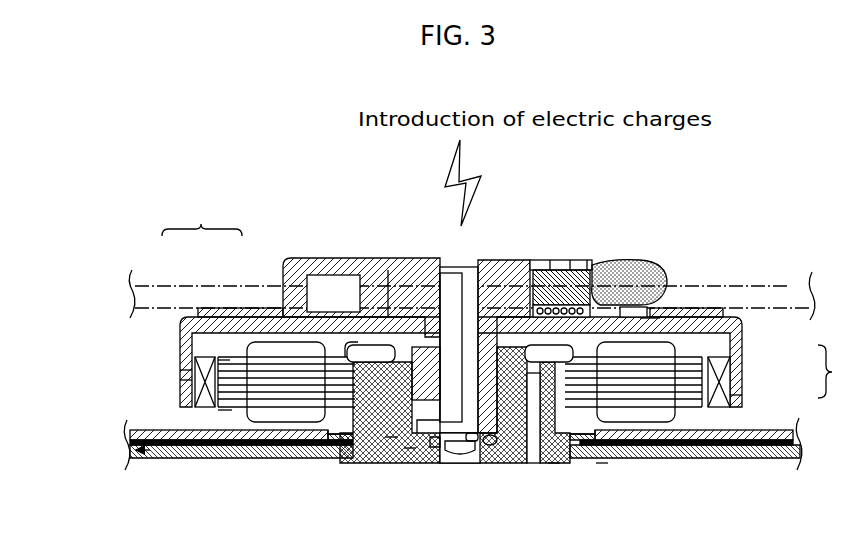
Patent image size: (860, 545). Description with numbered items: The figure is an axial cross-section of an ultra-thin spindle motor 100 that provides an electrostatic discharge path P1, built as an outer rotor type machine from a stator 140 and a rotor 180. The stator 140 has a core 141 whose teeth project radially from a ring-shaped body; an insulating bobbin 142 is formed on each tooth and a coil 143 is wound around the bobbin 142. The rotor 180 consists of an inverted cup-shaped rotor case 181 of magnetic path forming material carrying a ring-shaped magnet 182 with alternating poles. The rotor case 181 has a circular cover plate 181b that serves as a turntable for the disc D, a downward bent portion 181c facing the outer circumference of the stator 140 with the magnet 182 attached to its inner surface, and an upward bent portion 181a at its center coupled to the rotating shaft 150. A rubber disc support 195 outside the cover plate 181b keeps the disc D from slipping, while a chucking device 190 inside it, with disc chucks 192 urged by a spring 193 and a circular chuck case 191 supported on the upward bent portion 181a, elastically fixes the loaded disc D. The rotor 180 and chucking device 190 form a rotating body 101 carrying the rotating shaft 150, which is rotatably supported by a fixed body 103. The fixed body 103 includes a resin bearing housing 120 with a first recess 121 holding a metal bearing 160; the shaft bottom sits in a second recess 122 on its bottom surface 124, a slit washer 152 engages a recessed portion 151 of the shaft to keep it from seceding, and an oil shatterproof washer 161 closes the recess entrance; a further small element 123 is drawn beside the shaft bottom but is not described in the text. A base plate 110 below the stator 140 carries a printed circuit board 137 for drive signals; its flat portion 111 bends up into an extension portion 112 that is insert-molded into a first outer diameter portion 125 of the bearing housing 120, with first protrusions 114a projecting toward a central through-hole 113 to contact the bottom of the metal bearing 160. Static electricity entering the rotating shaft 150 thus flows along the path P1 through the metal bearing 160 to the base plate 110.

The ultra-thin spindle motor 100 is at (281, 151).
The rotating body 101 is at (172, 371).
The fixed body 103 is at (228, 415).
The base plate 110 is at (172, 460).
The flat portion 111 is at (672, 447).
The extension portion 112 is at (612, 457).
The through-hole 113 is at (553, 466).
The first protrusions 114a is at (410, 448).
The bearing housing 120 is at (366, 470).
The first recess 121 is at (392, 437).
The second recess 122 is at (474, 440).
The thrust member 123 is at (504, 445).
The bottom surface 124 is at (460, 452).
The first outer diameter portion 125 is at (603, 466).
The printed circuit board 137 is at (225, 441).
The stator 140 is at (202, 221).
The core 141 is at (267, 347).
The bobbin 142 is at (237, 357).
The coil 143 is at (227, 364).
The rotating shaft 150 is at (472, 292).
The recessed portion 151 is at (437, 448).
The slit washer 152 is at (518, 462).
The metal bearing 160 is at (390, 293).
The oil shatterproof washer 161 is at (427, 335).
The rotor 180 is at (836, 371).
The rotor case 181 is at (755, 350).
The upward bent portion 181a is at (515, 270).
The cover plate 181b is at (650, 321).
The downward bent portion 181c is at (733, 390).
The magnet 182 is at (727, 373).
The chucking device 190 is at (650, 252).
The chuck case 191 is at (548, 262).
The disc chuck 192 is at (625, 275).
The spring 193 is at (598, 266).
The disc support 195 is at (705, 310).
The electrostatic discharge path P1 is at (280, 441).
The disc D is at (793, 283).